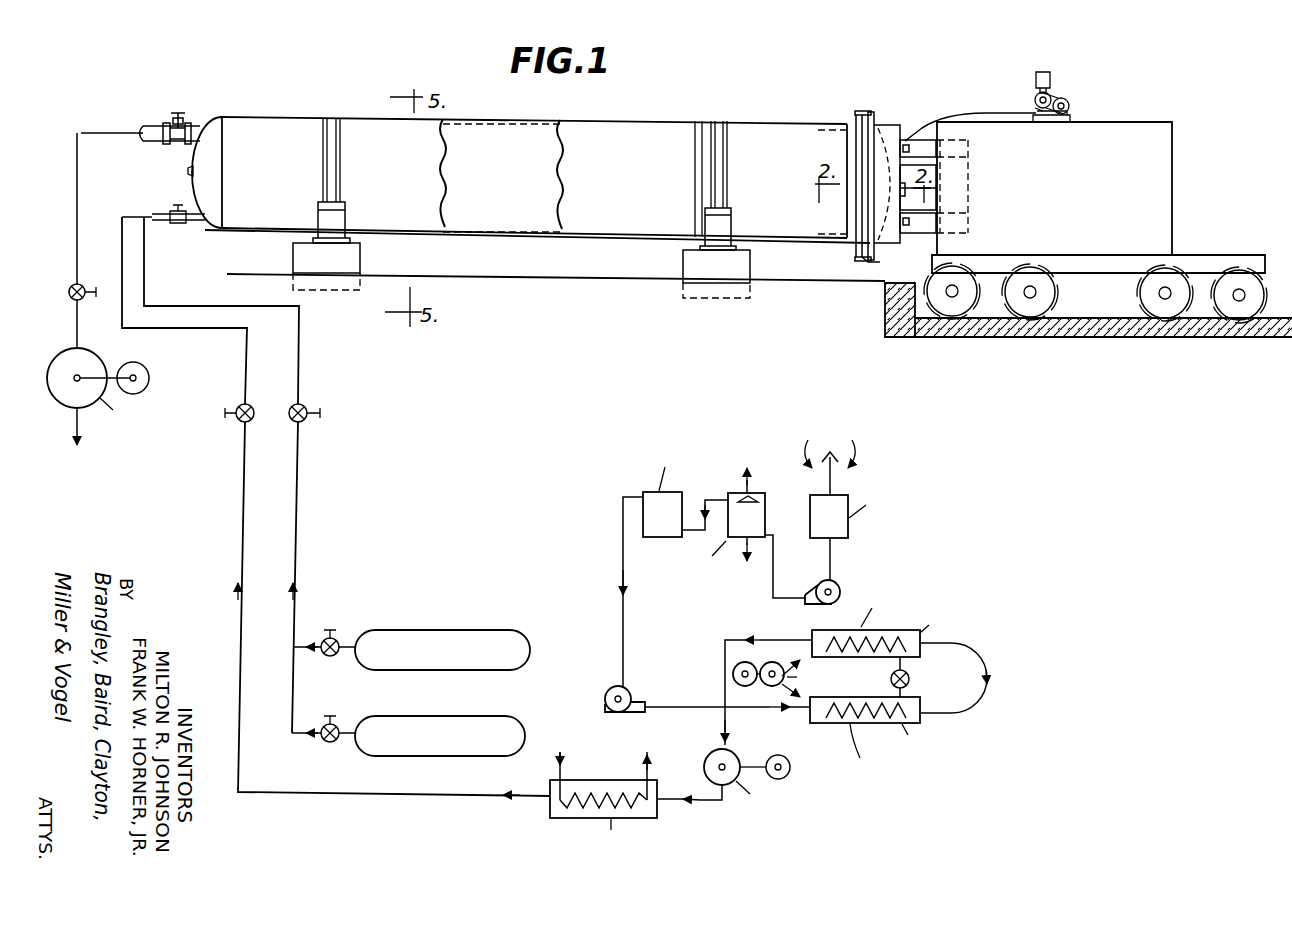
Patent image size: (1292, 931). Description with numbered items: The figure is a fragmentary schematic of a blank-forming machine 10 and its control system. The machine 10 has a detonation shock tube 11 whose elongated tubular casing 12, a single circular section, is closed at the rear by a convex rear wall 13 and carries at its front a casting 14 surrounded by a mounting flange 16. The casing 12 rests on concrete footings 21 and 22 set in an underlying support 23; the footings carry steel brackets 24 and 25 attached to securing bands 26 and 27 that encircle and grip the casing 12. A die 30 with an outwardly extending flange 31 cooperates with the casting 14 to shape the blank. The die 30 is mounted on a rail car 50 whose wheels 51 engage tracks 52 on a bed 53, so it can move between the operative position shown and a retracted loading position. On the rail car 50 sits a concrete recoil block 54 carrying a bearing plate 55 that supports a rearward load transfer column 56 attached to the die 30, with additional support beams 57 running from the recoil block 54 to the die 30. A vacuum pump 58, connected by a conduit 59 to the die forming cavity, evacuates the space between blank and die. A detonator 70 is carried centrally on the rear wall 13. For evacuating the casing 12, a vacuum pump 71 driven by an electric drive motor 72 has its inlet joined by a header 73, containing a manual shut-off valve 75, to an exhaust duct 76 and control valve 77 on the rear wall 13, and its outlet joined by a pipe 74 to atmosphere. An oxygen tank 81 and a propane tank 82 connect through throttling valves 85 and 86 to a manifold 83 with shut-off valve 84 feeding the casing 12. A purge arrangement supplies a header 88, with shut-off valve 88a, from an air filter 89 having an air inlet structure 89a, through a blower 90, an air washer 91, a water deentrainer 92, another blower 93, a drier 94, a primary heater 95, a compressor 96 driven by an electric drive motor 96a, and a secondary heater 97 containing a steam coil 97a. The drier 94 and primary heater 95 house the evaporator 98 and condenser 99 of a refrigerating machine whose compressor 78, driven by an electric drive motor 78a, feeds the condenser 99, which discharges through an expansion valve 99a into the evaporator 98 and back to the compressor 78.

The machine 10 is at (157, 60).
The detonation shock tube 11 is at (636, 118).
The elongated tubular casing 12 is at (472, 120).
The rear wall 13 is at (211, 117).
The casting 14 is at (848, 132).
The mounting flange 16 is at (858, 118).
The concrete footing 21 is at (355, 257).
The concrete footing 22 is at (683, 260).
The underlying support 23 is at (478, 278).
The steel bracket 24 is at (322, 222).
The steel bracket 25 is at (727, 230).
The securing band 26 is at (325, 124).
The securing band 27 is at (727, 128).
The die 30 is at (888, 122).
The flange 31 is at (868, 261).
The rail car 50 is at (1176, 230).
The wheels 51 is at (1048, 291).
The tracks 52 is at (1003, 330).
The bed 53 is at (948, 336).
The concrete recoil block 54 is at (1150, 127).
The bearing plate 55 is at (940, 177).
The load transfer column 56 is at (934, 190).
The support beams 57 is at (920, 139).
The vacuum pump 58 is at (1054, 86).
The conduit 59 is at (977, 114).
The detonator 70 is at (188, 173).
The vacuum pump 71 is at (63, 362).
The electric drive motor 72 is at (145, 372).
The header 73 is at (78, 216).
The pipe 74 is at (78, 427).
The shut-off valve 75 is at (70, 287).
The exhaust duct 76 is at (153, 125).
The control valve 77 is at (178, 111).
The compressor 78 is at (765, 685).
The electric drive motor 78a is at (744, 665).
The tank 81 is at (420, 631).
The tank 82 is at (420, 718).
The manifold 83 is at (300, 345).
The shut-off valve 84 is at (307, 404).
The throttling valve 85 is at (336, 637).
The throttling valve 86 is at (336, 723).
The header 88 is at (245, 363).
The shut-off valve 88a is at (253, 423).
The air filter 89 is at (871, 530).
The air inlet structure 89a is at (838, 452).
The blower 90 is at (840, 584).
The air washer 91 is at (727, 533).
The water deentrainer 92 is at (674, 565).
The blower 93 is at (629, 692).
The drier 94 is at (826, 724).
The primary heater 95 is at (816, 631).
The compressor 96 is at (732, 757).
The electric drive motor 96a is at (790, 769).
The secondary heater 97 is at (590, 779).
The steam coil 97a is at (580, 803).
The evaporator 98 is at (870, 723).
The condenser 99 is at (870, 633).
The expansion valve 99a is at (910, 677).